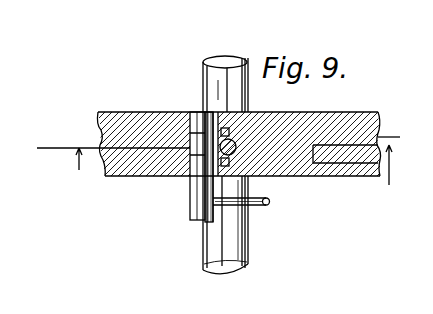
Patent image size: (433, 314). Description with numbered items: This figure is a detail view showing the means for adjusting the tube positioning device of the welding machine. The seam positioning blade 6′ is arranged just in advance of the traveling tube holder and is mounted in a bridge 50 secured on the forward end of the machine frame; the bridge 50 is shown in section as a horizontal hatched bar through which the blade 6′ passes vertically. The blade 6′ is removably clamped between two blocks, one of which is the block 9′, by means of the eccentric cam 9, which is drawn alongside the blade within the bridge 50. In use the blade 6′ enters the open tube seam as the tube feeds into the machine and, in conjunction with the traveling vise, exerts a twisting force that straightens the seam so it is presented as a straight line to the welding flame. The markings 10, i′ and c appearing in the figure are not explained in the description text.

The bridge 50 is at (130, 173).
The center line level 10 is at (219, 153).
The seam positioning blade 6′ is at (246, 113).
The eccentric cam 9 is at (193, 112).
The block 9′ is at (213, 160).
The pin i′ is at (240, 222).
The tube section c is at (233, 220).